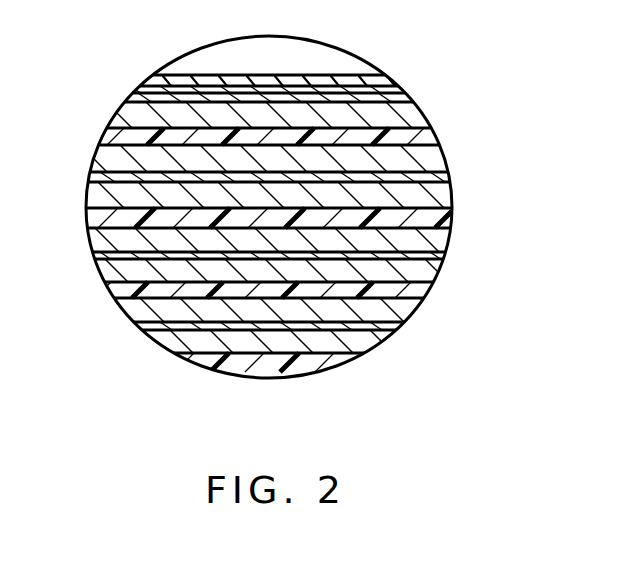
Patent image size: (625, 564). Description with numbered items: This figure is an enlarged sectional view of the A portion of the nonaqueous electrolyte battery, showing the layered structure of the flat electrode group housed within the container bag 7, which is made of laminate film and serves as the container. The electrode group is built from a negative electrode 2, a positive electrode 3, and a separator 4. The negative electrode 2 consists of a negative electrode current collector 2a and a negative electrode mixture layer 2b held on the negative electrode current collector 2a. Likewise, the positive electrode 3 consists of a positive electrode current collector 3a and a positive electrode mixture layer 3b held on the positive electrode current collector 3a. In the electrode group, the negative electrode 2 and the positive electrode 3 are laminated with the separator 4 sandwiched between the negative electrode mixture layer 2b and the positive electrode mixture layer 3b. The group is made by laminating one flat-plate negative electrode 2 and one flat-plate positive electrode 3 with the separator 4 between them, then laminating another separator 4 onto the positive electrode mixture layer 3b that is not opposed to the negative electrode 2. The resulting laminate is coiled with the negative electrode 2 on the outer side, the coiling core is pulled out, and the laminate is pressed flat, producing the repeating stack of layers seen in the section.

The A portion A is at (182, 62).
The container bag 7 is at (385, 78).
The negative electrode 2 is at (490, 56).
The negative electrode current collector 2a is at (410, 93).
The negative electrode mixture layer 2b is at (408, 112).
The positive electrode 3 is at (522, 126).
The positive electrode current collector 3a is at (433, 173).
The positive electrode mixture layer 3b is at (427, 152).
The separator 4 is at (117, 137).